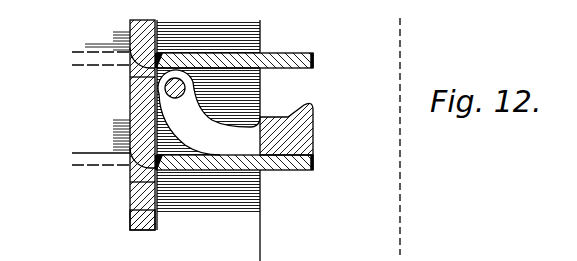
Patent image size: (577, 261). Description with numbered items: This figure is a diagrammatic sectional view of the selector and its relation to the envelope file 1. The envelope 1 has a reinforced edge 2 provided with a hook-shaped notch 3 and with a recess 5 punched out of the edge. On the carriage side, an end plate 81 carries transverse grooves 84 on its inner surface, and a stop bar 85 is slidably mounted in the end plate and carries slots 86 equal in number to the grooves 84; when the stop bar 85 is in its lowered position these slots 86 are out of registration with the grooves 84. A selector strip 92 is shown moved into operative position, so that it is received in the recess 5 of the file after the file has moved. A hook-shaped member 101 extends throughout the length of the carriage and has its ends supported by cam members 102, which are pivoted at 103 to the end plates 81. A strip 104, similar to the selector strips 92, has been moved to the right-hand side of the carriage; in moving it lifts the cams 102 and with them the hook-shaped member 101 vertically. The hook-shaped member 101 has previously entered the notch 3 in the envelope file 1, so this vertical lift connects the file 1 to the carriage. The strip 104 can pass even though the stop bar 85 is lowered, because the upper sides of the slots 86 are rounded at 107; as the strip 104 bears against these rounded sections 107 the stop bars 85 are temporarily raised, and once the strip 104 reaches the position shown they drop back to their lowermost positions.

The envelope 1 is at (410, 57).
The reinforced edge 2 is at (260, 235).
The hook-shaped notch 3 is at (316, 139).
The recess 5 is at (244, 46).
The end plate 81 is at (121, 125).
The transverse groove 84 is at (120, 160).
The stop bar 85 is at (131, 210).
The slot 86 is at (132, 180).
The selector strip 92 is at (252, 66).
The hook-shaped member 101 is at (315, 153).
The cam member 102 is at (186, 88).
The pivot 103 is at (160, 92).
The strip 104 is at (237, 157).
The rounded section 107 is at (130, 67).